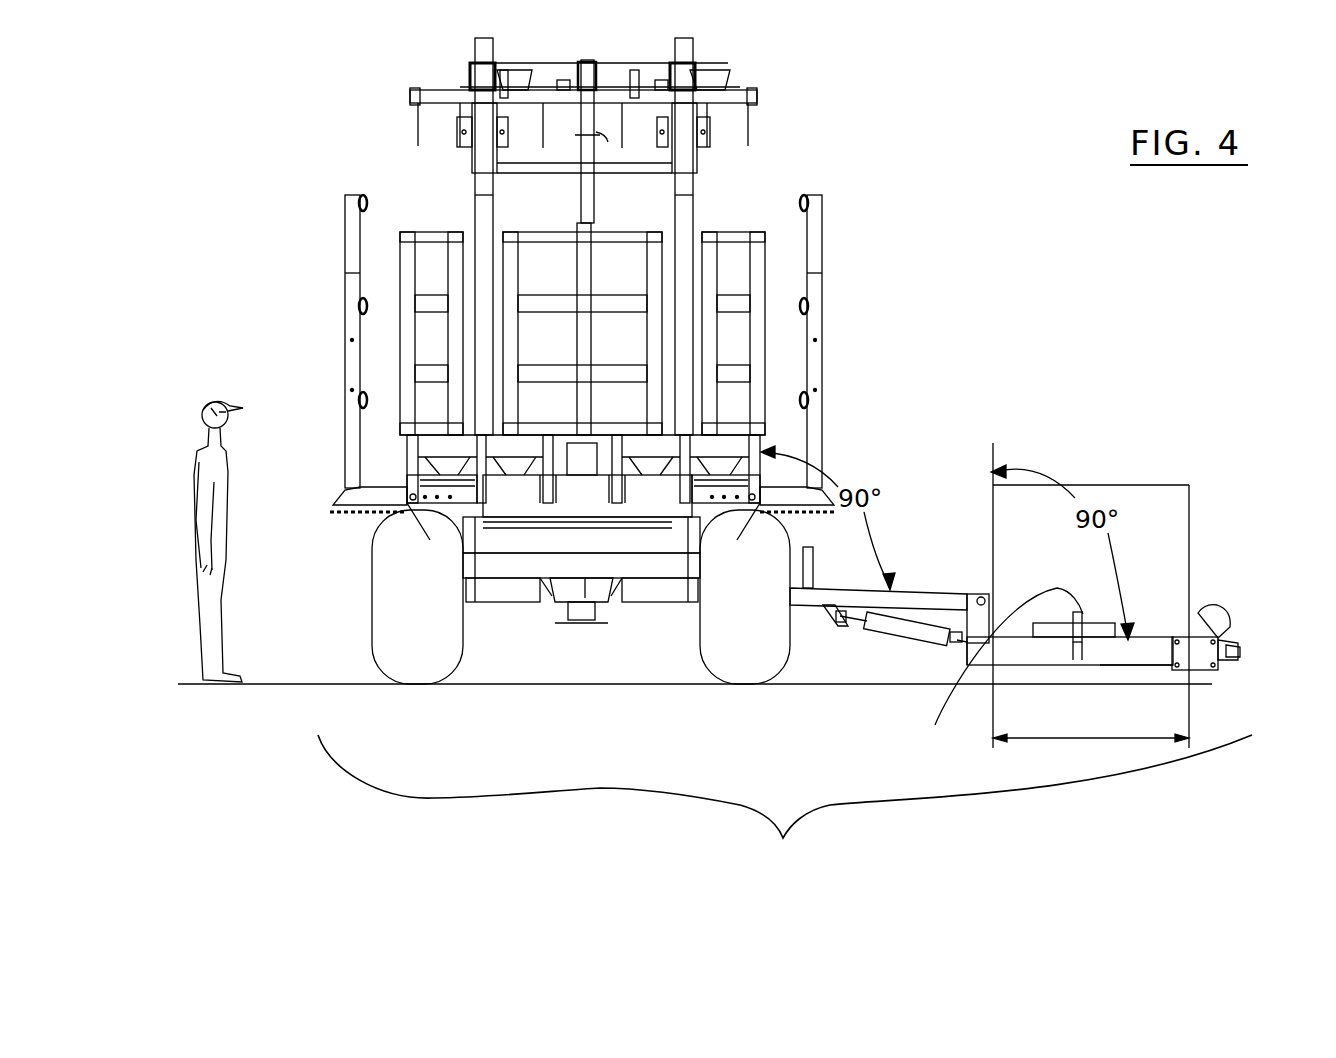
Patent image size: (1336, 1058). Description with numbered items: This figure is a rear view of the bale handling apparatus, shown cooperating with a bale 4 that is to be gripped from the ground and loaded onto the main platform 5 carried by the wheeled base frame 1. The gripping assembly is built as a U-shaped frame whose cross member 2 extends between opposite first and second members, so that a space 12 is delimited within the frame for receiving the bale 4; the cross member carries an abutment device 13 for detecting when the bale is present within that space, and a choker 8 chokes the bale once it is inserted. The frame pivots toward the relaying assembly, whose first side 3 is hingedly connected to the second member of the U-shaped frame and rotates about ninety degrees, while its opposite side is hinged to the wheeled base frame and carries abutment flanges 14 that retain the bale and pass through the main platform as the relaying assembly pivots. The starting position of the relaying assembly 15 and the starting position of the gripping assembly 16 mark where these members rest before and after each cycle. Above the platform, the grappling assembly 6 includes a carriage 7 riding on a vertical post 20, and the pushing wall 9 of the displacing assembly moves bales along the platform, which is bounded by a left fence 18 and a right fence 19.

The wheeled base frame 1 is at (785, 804).
The cross member 2 is at (905, 590).
The first side of the relaying assembly 3 is at (1155, 637).
The bale 4 is at (1123, 485).
The main platform 5 is at (430, 467).
The grappling assembly 6 is at (408, 92).
The carriage of grappling assembly 7 is at (475, 185).
The choker 8 is at (1223, 614).
The pushing wall of the displacing assembly 9 is at (757, 236).
The space defined within the U-shaped frame 12 is at (1075, 748).
The abutment device of the cross-member 13 is at (994, 669).
The abutment flanges 14 is at (812, 568).
The starting position of the relaying assembly 15 is at (1152, 665).
The starting position of the gripping assembly 16 is at (818, 605).
The left fence 18 is at (345, 198).
The right fence 19 is at (822, 204).
The vertical post of the grappling assembly 20 is at (692, 187).